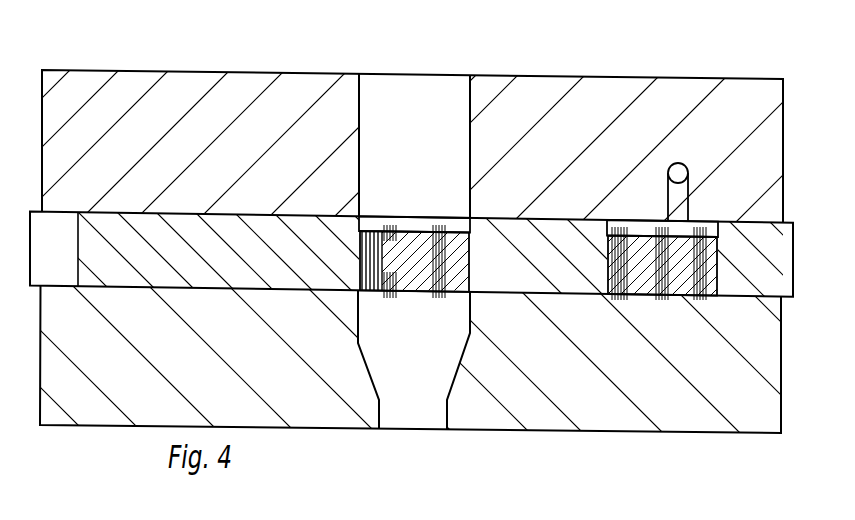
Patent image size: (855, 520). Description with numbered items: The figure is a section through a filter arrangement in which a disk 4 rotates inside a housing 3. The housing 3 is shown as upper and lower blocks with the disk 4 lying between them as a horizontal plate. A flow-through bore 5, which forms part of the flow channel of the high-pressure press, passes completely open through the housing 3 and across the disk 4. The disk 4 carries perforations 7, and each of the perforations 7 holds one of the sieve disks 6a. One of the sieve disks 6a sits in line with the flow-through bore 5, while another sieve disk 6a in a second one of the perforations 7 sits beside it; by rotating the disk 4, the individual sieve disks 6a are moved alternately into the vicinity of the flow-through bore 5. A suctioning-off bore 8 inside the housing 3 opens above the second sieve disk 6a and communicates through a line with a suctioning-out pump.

The housing 3 is at (548, 127).
The disk 4 is at (482, 230).
The flow-through bore 5 is at (418, 100).
The sieve disks 6a is at (382, 260).
The perforations 7 is at (385, 231).
The suctioning-off bore 8 is at (678, 170).